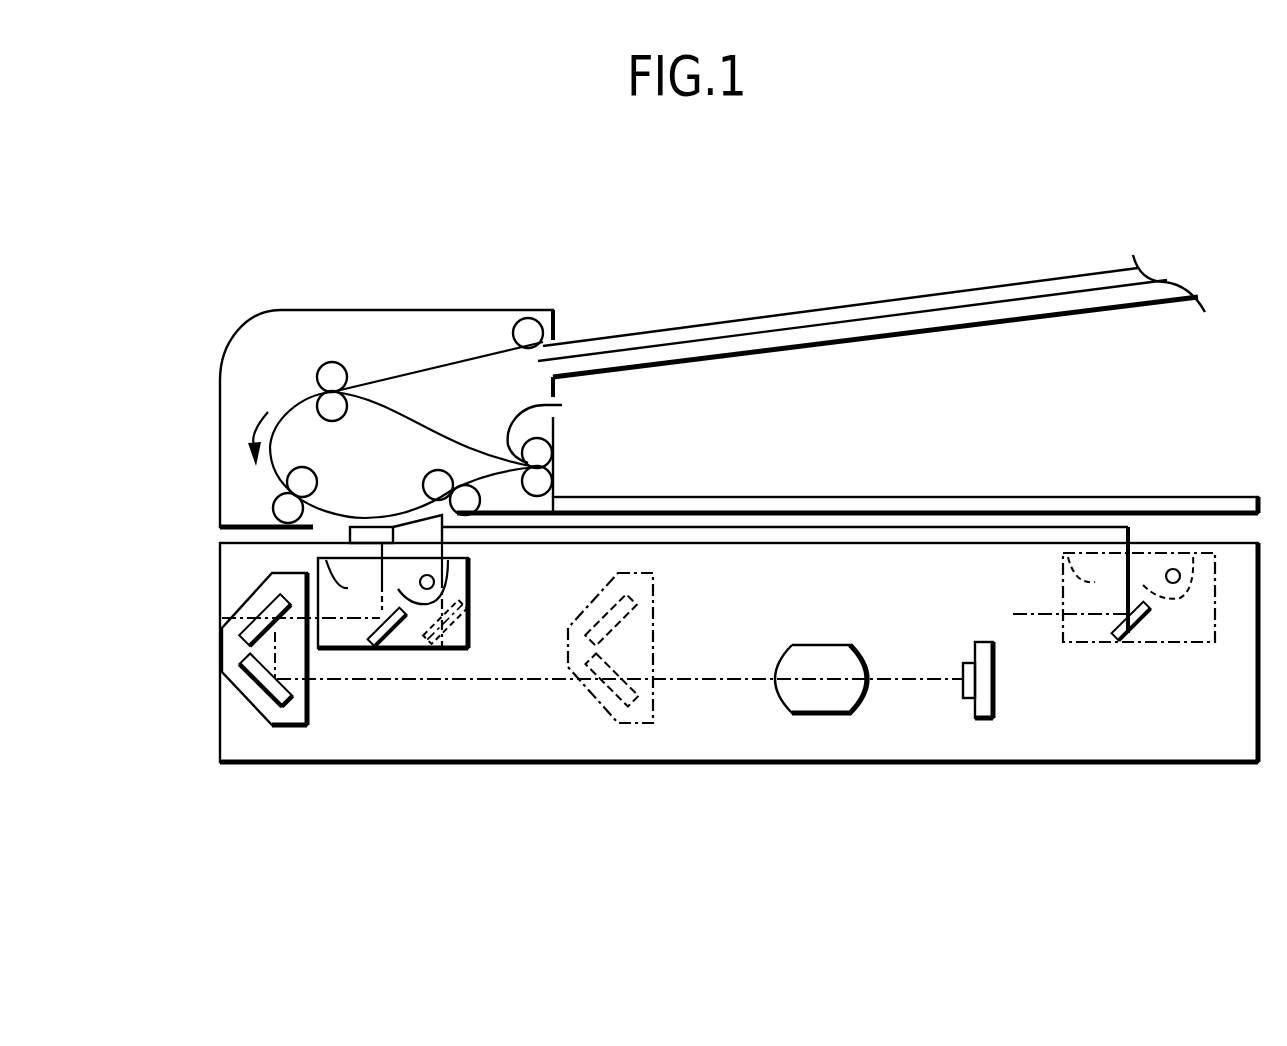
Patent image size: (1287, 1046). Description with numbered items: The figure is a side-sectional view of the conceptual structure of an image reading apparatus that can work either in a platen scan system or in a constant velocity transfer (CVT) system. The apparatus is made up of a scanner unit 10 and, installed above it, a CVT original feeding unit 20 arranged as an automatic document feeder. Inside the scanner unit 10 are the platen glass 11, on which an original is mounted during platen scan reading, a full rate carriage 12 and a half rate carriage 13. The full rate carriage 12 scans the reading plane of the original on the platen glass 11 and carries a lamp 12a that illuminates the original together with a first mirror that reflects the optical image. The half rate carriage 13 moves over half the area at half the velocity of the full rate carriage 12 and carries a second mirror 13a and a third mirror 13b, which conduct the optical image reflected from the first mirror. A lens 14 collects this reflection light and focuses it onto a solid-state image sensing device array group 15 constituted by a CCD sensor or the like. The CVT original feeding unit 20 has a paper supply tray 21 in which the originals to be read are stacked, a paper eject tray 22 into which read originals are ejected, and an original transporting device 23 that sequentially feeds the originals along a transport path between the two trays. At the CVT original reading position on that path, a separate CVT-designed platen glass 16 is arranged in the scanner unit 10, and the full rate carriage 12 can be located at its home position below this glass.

The scanner unit 10 is at (1218, 762).
The platen glass 11 is at (1098, 527).
The full rate carriage 12 is at (470, 627).
The lamp 12a is at (446, 578).
The half rate carriage 13 is at (285, 727).
The second mirror 13a is at (253, 620).
The third mirror 13b is at (253, 683).
The lens 14 is at (818, 715).
The solid-state image sensing device array group 15 is at (982, 718).
The CVT-designed platen glass 16 is at (375, 527).
The CVT original feeding unit 20 is at (548, 300).
The paper supply tray 21 is at (877, 302).
The paper eject tray 22 is at (993, 497).
The original transporting device 23 is at (358, 382).